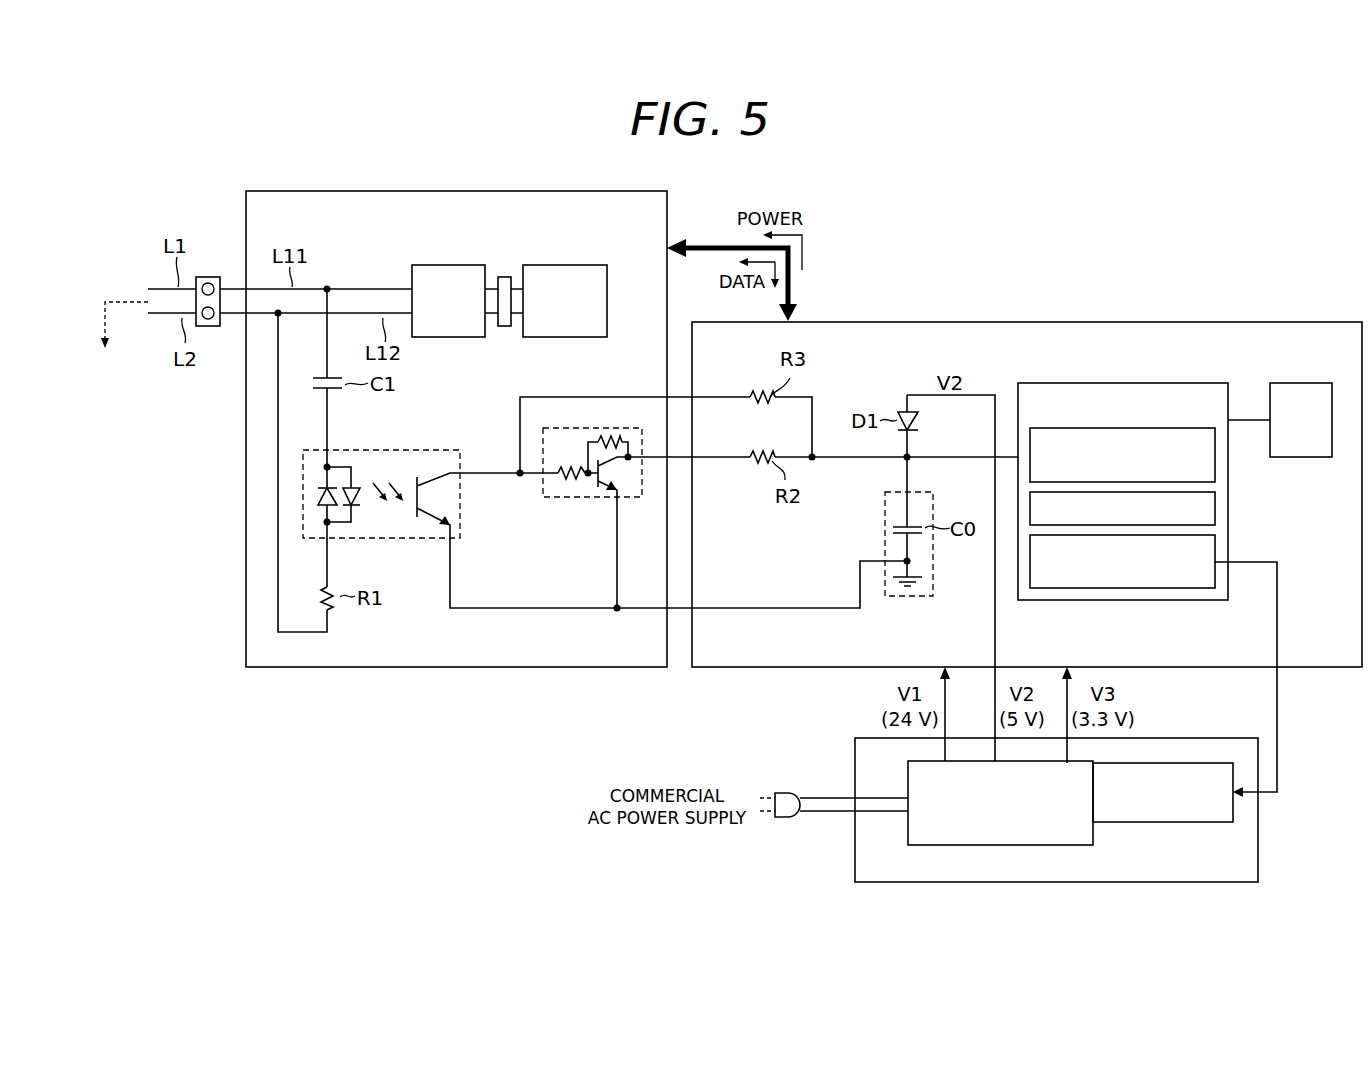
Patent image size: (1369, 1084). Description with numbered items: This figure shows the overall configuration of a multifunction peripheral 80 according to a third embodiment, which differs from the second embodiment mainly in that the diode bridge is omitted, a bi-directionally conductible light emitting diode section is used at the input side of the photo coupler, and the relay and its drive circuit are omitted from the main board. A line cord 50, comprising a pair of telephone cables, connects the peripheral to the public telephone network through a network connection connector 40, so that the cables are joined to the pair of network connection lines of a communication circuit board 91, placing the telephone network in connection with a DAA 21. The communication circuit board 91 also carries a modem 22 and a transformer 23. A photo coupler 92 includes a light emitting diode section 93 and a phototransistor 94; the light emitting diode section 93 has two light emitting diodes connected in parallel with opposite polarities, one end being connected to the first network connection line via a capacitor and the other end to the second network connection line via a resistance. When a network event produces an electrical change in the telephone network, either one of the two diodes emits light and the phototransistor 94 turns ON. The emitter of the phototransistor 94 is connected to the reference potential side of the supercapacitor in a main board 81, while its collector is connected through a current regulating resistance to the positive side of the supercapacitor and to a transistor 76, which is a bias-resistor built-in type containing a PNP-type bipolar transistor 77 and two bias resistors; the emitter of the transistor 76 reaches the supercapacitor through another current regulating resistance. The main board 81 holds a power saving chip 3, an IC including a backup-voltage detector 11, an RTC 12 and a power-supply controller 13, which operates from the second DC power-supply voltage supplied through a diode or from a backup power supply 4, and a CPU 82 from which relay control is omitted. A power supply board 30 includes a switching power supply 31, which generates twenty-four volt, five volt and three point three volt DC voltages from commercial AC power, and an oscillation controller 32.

The power saving chip 3 is at (1141, 478).
The backup power supply 4 is at (934, 575).
The backup-voltage detector 11 is at (1216, 457).
The RTC 12 is at (1216, 508).
The power-supply controller 13 is at (1216, 547).
The DAA 21 is at (455, 265).
The modem 22 is at (578, 265).
The transformer 23 is at (505, 277).
The power supply board 30 is at (1031, 810).
The switching power supply 31 is at (908, 786).
The oscillation controller 32 is at (1163, 822).
The network connection connector 40 is at (210, 277).
The line cord 50 is at (158, 332).
The transistor 76 is at (563, 497).
The PNP-type bipolar transistor 77 is at (600, 497).
The multifunction peripheral 80 is at (1195, 250).
The main board 81 is at (1078, 322).
The CPU 82 is at (1307, 383).
The communication circuit board 91 is at (597, 190).
The photo coupler 92 is at (485, 505).
The light emitting diode section 93 is at (355, 510).
The phototransistor 94 is at (433, 477).